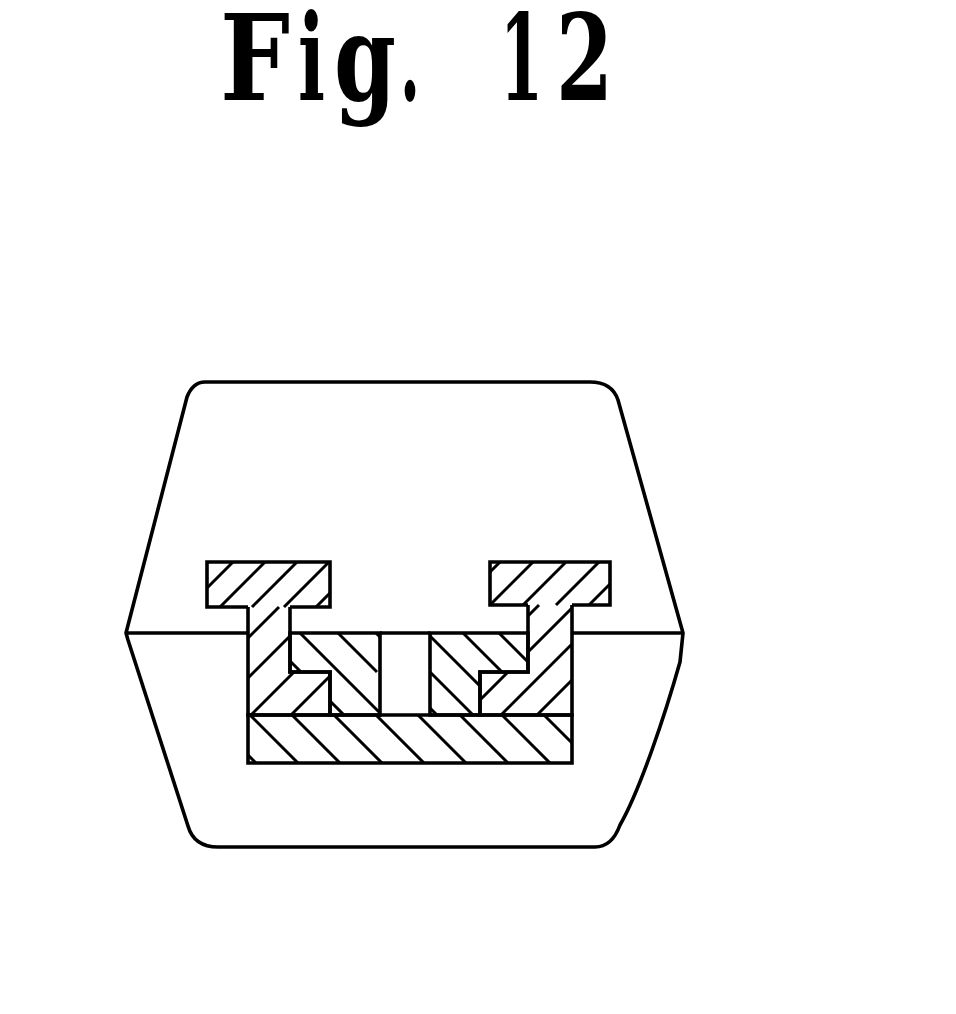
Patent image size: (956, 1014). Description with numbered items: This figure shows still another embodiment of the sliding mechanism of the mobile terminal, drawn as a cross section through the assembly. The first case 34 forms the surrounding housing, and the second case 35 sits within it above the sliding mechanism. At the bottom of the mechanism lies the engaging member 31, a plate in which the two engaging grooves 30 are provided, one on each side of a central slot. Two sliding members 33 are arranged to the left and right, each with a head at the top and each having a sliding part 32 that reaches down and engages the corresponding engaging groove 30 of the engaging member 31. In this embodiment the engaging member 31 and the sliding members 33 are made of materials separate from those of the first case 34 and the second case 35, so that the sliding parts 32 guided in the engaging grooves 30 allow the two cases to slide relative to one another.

The engaging groove 30 is at (333, 697).
The engaging member 31 is at (402, 763).
The sliding part 32 is at (257, 690).
The sliding member 33 is at (250, 573).
The first case 34 is at (244, 793).
The second case 35 is at (560, 405).